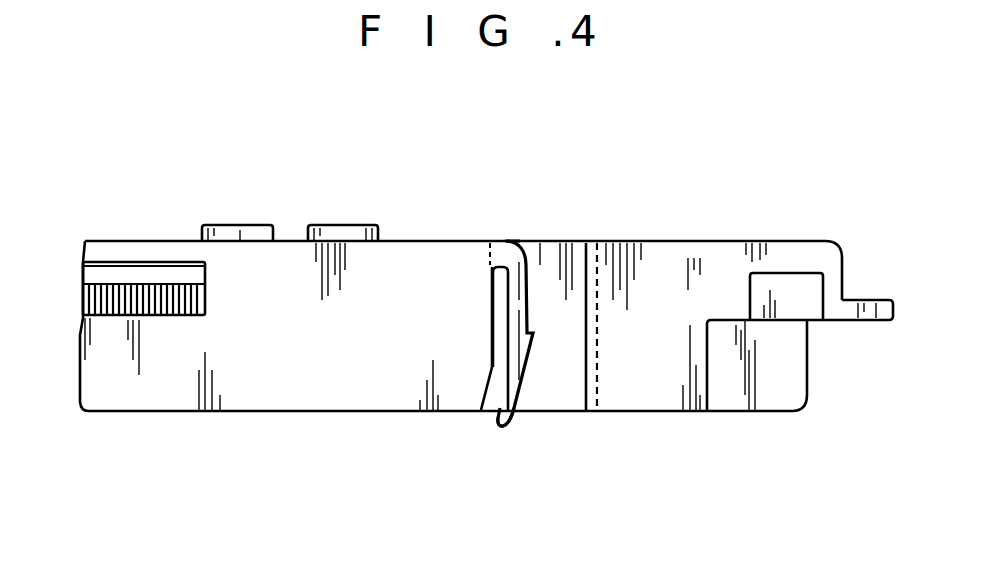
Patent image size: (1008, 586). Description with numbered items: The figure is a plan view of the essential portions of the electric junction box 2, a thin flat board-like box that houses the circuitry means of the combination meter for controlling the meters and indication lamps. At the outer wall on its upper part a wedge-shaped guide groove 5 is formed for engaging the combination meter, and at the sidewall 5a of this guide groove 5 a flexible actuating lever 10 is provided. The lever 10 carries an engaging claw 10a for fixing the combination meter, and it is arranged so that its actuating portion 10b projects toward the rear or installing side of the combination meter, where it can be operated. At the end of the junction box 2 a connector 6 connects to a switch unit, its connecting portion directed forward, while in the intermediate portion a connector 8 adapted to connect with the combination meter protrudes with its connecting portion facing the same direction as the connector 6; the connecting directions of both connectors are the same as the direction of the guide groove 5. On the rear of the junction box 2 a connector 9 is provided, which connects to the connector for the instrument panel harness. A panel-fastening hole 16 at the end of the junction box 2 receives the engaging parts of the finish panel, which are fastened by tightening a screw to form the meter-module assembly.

The electric junction box 2 is at (427, 241).
The guide groove 5 is at (578, 253).
The sidewall of the guide groove 5a is at (496, 326).
The connector 6 is at (784, 273).
The connector 8 is at (150, 318).
The connector 9 is at (325, 224).
The flexible actuating lever 10 is at (527, 378).
The engaging claw 10a is at (533, 333).
The actuating portion 10b is at (508, 424).
The panel-fastening hole 16 is at (865, 300).